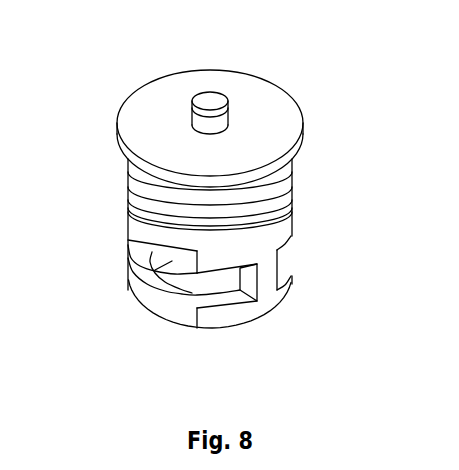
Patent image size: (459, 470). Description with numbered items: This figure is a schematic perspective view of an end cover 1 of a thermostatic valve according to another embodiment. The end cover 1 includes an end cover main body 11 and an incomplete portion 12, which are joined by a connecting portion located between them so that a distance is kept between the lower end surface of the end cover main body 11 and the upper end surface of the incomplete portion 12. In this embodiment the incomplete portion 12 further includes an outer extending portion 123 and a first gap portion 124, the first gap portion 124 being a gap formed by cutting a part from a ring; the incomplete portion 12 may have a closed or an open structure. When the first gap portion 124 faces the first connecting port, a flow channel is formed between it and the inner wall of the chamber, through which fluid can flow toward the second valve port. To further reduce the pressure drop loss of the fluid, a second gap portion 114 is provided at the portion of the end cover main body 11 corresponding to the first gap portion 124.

The end cover 1 is at (220, 206).
The end cover main body 11 is at (280, 221).
The incomplete portion 12 is at (220, 284).
The second gap portion 114 is at (175, 260).
The outer extending portion 123 is at (228, 320).
The first gap portion 124 is at (153, 298).